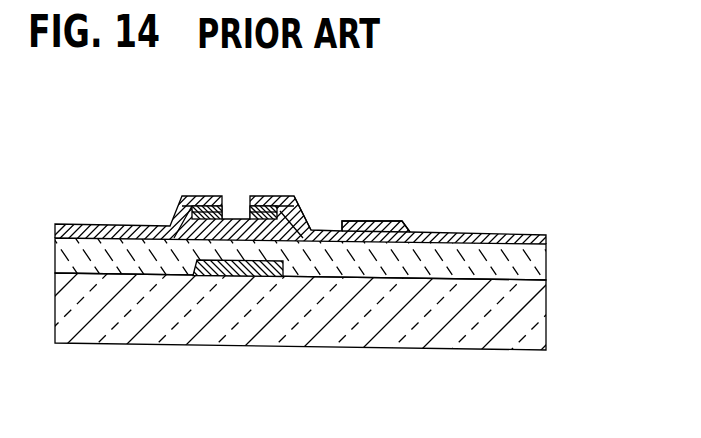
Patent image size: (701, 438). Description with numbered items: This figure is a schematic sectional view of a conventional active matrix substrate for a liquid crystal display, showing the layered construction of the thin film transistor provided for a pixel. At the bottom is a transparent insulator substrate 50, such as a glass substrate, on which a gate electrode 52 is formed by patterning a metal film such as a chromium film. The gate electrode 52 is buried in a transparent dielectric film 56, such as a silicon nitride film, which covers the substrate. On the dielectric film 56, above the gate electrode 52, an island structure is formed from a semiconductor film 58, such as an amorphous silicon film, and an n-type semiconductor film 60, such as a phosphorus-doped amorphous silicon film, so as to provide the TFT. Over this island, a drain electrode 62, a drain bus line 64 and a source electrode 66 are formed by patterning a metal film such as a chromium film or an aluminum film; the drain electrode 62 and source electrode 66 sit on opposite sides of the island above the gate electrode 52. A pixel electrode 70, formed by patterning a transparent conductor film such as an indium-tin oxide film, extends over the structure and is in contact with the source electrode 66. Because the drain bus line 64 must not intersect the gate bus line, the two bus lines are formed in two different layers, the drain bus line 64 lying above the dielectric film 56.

The transparent insulator substrate 50 is at (500, 323).
The gate electrode 52 is at (218, 277).
The transparent dielectric film 56 is at (507, 262).
The semiconductor film 58 is at (305, 228).
The n-type semiconductor film 60 is at (278, 200).
The drain electrode 62 is at (208, 197).
The drain bus line 64 is at (110, 232).
The source electrode 66 is at (296, 203).
The pixel electrode 70 is at (458, 235).